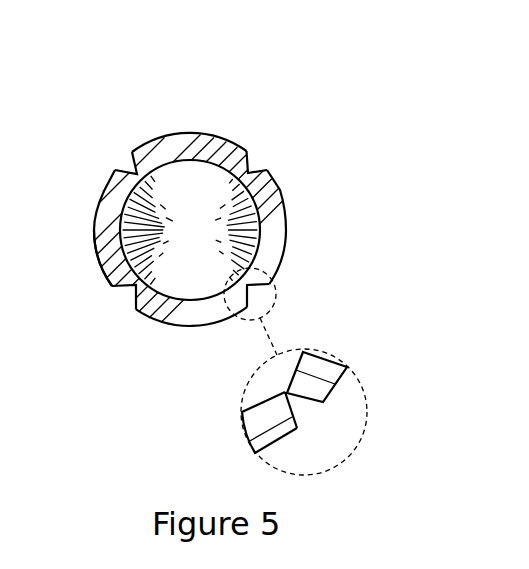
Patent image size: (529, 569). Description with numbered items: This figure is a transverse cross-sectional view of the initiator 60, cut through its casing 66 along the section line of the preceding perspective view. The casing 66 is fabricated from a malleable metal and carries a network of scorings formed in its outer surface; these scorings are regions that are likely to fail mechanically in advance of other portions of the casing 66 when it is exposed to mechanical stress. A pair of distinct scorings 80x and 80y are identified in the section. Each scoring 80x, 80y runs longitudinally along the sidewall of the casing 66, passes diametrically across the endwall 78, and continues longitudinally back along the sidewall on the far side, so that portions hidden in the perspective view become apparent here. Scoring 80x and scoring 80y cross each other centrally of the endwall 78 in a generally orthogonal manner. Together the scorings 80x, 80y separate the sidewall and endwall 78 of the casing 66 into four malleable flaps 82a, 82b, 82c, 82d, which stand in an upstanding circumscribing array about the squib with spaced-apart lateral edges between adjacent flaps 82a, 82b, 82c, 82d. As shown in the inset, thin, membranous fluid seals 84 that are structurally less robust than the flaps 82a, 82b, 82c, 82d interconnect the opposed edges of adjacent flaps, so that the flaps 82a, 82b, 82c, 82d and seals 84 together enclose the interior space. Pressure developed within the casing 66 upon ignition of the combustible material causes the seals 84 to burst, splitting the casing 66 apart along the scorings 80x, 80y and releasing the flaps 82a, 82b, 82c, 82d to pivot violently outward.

The initiator 60 is at (299, 97).
The casing 66 is at (79, 213).
The endwall 78 is at (203, 260).
The scoring 80x is at (116, 157).
The scoring 80y is at (263, 160).
The malleable flap 82a is at (148, 338).
The malleable flap 82b is at (304, 232).
The malleable flap 82c is at (186, 118).
The malleable flap 82d is at (84, 259).
The membranous fluid seal 84 is at (286, 391).